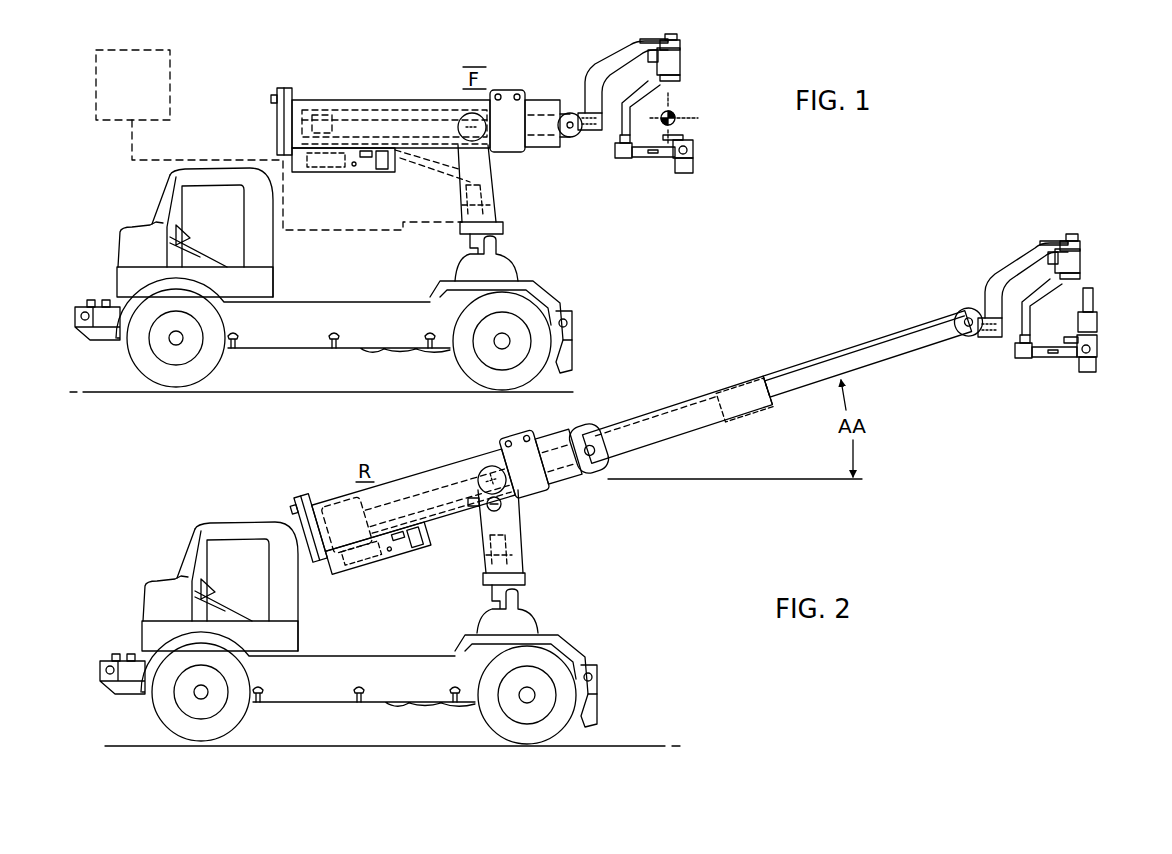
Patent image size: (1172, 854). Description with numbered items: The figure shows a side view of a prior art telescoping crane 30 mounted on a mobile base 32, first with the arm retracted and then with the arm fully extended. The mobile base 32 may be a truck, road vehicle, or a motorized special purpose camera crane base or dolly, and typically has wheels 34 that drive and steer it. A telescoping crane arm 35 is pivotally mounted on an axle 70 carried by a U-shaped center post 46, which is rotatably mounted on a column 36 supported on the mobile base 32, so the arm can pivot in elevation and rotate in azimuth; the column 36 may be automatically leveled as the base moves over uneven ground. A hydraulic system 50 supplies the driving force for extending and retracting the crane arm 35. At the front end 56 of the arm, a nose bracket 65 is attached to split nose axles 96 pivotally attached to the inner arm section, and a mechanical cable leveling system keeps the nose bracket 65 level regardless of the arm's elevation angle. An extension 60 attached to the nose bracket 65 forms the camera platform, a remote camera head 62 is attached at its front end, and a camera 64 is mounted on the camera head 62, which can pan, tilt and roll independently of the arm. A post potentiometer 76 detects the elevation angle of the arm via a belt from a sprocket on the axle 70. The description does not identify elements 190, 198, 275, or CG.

In FIG. 1, the telescoping crane 30 is at (540, 90).
In FIG. 2, the telescoping crane 30 is at (798, 352).
In FIG. 1, the mobile base 32 is at (414, 275).
In FIG. 2, the mobile base 32 is at (350, 654).
In FIG. 1, the wheels 34 is at (178, 388).
In FIG. 2, the wheels 34 is at (364, 714).
In FIG. 1, the telescoping crane arm 35 is at (426, 148).
In FIG. 2, the telescoping crane arm 35 is at (578, 486).
In FIG. 1, the column 36 is at (504, 234).
In FIG. 2, the column 36 is at (504, 579).
In FIG. 1, the U-shaped center post 46 is at (471, 176).
In FIG. 2, the U-shaped center post 46 is at (503, 523).
In FIG. 1, the hydraulic system 50 is at (343, 184).
In FIG. 2, the hydraulic system 50 is at (378, 563).
In FIG. 2, the front end 56 is at (878, 360).
In FIG. 1, the extension 60 is at (622, 62).
In FIG. 2, the extension 60 is at (1008, 275).
In FIG. 1, the remote camera head 62 is at (678, 73).
In FIG. 2, the remote camera head 62 is at (1022, 325).
In FIG. 2, the camera 64 is at (1094, 308).
In FIG. 2, the nose bracket 65 is at (980, 340).
In FIG. 1, the axle 70 is at (472, 127).
In FIG. 2, the axle 70 is at (489, 462).
In FIG. 2, the post potentiometer 76 is at (503, 505).
In FIG. 2, the split nose axles 96 is at (968, 312).
In FIG. 2, the outer boom section 190 is at (862, 345).
In FIG. 2, the boom lug 198 is at (950, 335).
In FIG. 1, the controller 275 is at (150, 50).
In FIG. 1, the center of gravity CG is at (675, 113).